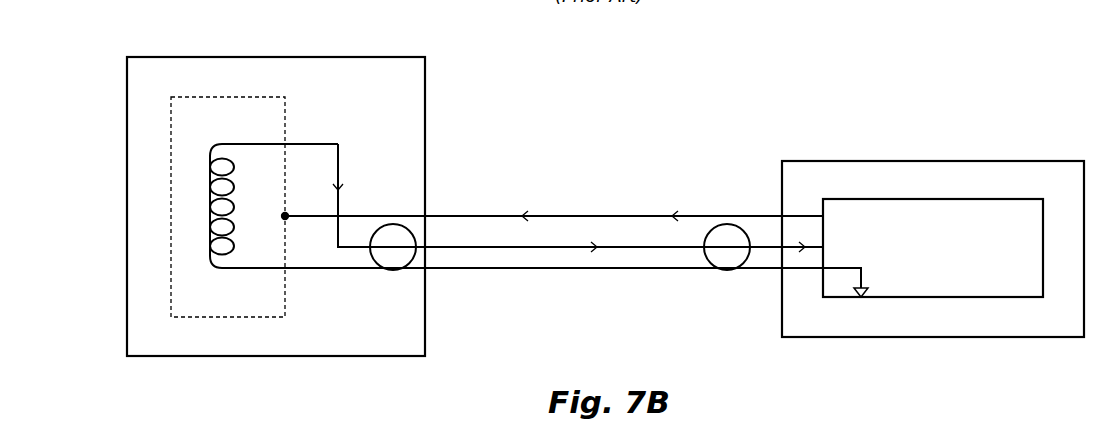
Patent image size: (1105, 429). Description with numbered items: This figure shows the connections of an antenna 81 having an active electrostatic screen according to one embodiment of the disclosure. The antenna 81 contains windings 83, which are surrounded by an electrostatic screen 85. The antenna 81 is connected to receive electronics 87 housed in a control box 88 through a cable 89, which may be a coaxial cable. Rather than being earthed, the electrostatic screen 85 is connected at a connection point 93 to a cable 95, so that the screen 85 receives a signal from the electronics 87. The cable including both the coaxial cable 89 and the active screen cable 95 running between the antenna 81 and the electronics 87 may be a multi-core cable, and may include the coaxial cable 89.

The antenna 81 is at (364, 57).
The windings 83 is at (207, 215).
The electrostatic screen 85 is at (170, 144).
The receive electronics 87 is at (933, 248).
The control box 88 is at (988, 161).
The cable 89 is at (565, 273).
The connection point 93 is at (285, 218).
The active screen cable 95 is at (498, 212).